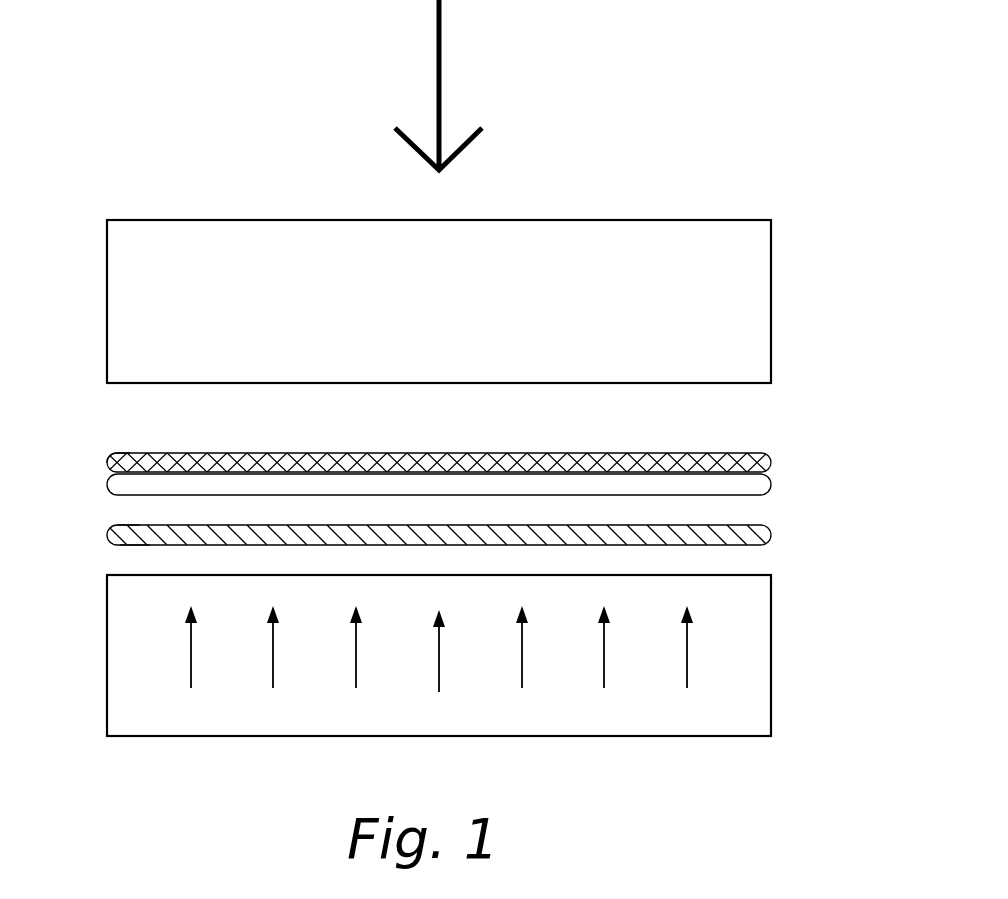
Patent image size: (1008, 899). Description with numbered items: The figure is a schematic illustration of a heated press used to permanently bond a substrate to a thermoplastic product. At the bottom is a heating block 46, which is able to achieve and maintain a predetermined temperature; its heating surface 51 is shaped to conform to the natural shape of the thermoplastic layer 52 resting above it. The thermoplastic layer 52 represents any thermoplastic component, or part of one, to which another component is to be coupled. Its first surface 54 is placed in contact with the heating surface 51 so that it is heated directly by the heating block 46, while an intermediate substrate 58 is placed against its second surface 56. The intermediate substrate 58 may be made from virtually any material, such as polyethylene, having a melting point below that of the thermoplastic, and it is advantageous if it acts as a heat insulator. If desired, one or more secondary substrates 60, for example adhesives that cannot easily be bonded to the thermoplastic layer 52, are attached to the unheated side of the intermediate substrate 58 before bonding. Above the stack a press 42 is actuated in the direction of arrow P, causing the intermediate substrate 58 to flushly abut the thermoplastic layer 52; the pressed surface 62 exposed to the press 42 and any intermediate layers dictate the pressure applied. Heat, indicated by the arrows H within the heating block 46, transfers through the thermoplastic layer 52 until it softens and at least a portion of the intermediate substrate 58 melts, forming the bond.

The press 42 is at (771, 288).
The heating block 46 is at (478, 655).
The heating surface 51 is at (750, 575).
The thermoplastic layer 52 is at (772, 535).
The first surface 54 is at (143, 546).
The second surface 56 is at (128, 528).
The intermediate substrate 58 is at (772, 483).
The secondary substrate 60 is at (772, 462).
The pressed surface 62 is at (118, 454).
The arrow P is at (443, 80).
The applied heat H is at (276, 663).